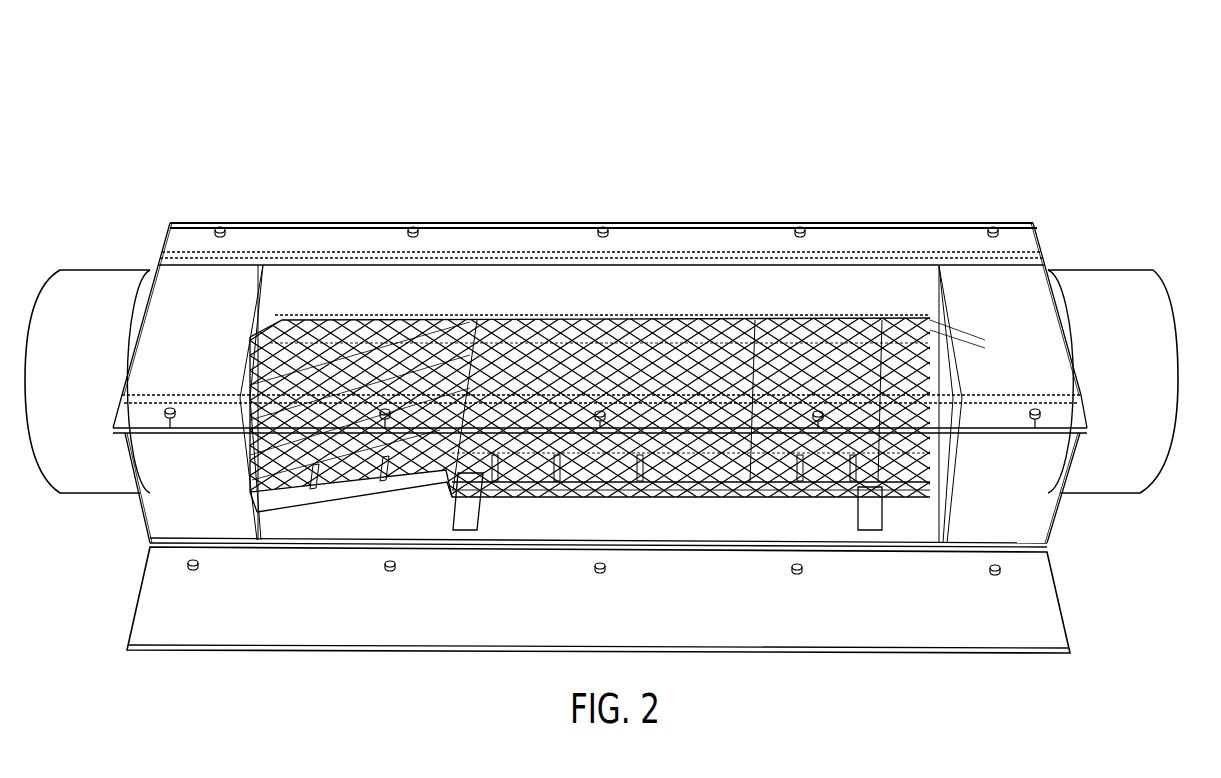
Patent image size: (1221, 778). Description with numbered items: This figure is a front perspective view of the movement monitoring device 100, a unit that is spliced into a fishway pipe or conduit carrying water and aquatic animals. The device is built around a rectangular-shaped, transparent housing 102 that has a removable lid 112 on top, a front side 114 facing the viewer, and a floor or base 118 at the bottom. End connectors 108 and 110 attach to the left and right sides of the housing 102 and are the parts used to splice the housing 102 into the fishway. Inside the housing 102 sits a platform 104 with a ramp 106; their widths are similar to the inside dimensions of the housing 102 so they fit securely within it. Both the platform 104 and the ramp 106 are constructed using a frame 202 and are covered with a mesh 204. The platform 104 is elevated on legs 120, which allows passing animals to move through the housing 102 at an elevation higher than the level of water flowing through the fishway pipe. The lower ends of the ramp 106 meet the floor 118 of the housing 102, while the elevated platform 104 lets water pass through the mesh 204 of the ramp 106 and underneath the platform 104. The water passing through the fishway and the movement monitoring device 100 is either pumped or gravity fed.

The movement monitoring device 100 is at (76, 121).
The housing 102 is at (1050, 176).
The platform 104 is at (664, 444).
The ramp 106 is at (326, 455).
The end connector 108 is at (56, 276).
The end connector 110 is at (1147, 276).
The removable lid 112 is at (900, 222).
The front side 114 is at (147, 540).
The floor 118 is at (812, 636).
The legs 120 is at (466, 530).
The frame 202 is at (355, 481).
The mesh 204 is at (723, 468).